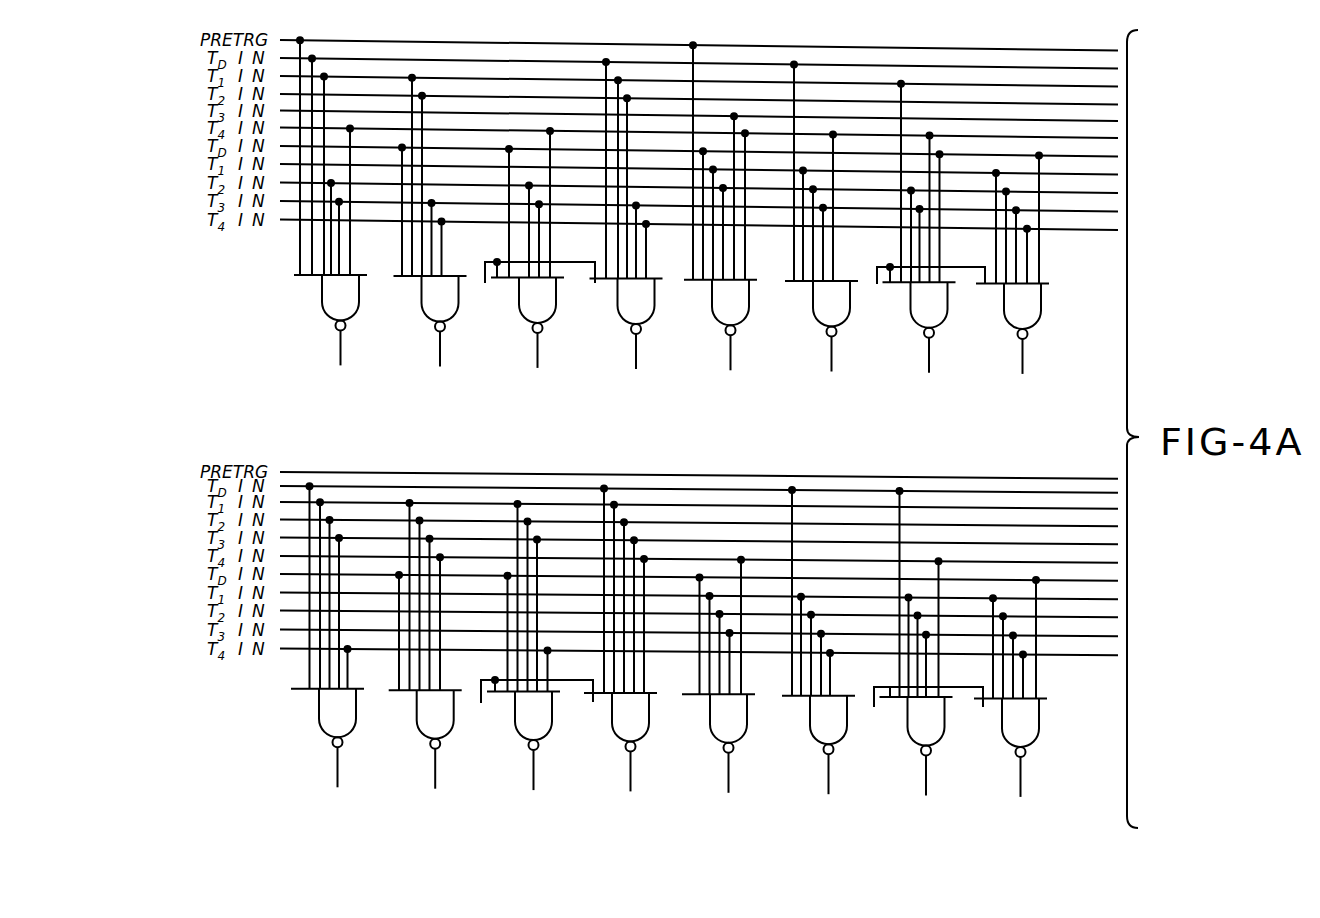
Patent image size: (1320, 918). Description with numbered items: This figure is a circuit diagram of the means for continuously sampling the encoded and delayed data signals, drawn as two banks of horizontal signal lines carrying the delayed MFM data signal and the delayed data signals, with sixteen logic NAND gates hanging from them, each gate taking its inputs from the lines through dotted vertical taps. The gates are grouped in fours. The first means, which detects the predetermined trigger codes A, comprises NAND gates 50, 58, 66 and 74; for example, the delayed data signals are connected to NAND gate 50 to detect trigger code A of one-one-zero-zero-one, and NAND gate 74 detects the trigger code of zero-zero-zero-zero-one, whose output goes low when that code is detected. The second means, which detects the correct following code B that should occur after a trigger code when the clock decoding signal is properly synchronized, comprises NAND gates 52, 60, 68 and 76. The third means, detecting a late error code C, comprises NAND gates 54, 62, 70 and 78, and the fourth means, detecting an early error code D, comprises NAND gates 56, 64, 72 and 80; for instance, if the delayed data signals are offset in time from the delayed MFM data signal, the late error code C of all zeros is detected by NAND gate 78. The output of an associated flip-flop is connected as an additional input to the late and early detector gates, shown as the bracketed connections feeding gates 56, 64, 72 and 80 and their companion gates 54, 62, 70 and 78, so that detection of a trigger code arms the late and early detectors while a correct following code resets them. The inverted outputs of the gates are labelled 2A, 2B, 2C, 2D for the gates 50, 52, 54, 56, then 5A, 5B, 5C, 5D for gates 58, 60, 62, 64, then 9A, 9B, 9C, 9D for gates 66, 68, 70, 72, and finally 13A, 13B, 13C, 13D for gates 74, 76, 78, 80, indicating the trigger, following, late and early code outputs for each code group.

The NAND gate 50 is at (323, 301).
The NAND gate 52 is at (423, 305).
The NAND gate 54 is at (521, 306).
The NAND gate 56 is at (619, 307).
The NAND gate 58 is at (714, 308).
The NAND gate 60 is at (815, 309).
The NAND gate 62 is at (913, 310).
The NAND gate 64 is at (1006, 311).
The NAND gate 66 is at (320, 722).
The NAND gate 68 is at (418, 723).
The NAND gate 70 is at (517, 724).
The NAND gate 72 is at (614, 725).
The NAND gate 74 is at (712, 727).
The NAND gate 76 is at (812, 728).
The NAND gate 78 is at (909, 729).
The NAND gate 80 is at (1004, 730).
The gate output signal 2A is at (356, 352).
The gate output signal 2B is at (455, 353).
The gate output signal 2C is at (552, 354).
The gate output signal 2D is at (651, 355).
The gate output signal 5A is at (730, 362).
The gate output signal 5B is at (846, 357).
The gate output signal 5C is at (929, 364).
The gate output signal 5D is at (1022, 365).
The gate output signal 9A is at (352, 772).
The gate output signal 9B is at (450, 773).
The gate output signal 9C is at (548, 775).
The gate output signal 9D is at (646, 776).
The gate output signal 13A is at (744, 778).
The gate output signal 13B is at (844, 779).
The gate output signal 13C is at (941, 781).
The gate output signal 13D is at (1036, 782).